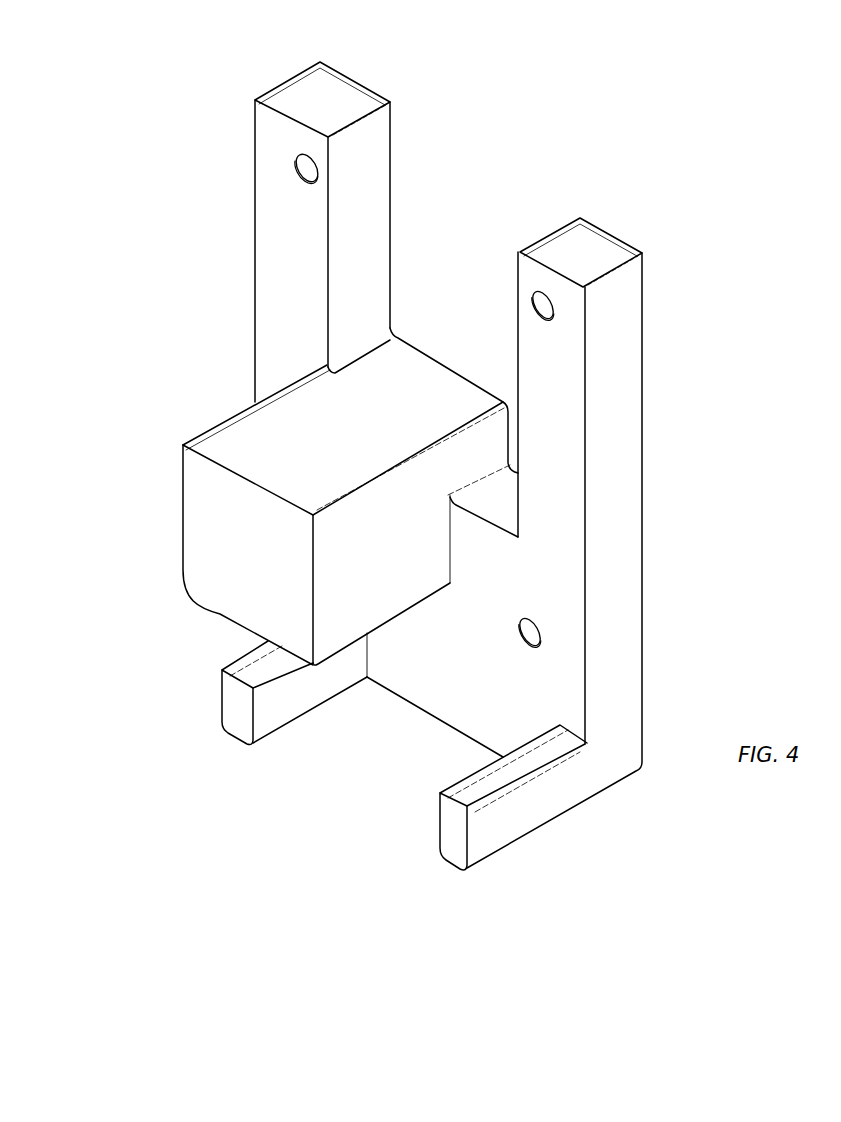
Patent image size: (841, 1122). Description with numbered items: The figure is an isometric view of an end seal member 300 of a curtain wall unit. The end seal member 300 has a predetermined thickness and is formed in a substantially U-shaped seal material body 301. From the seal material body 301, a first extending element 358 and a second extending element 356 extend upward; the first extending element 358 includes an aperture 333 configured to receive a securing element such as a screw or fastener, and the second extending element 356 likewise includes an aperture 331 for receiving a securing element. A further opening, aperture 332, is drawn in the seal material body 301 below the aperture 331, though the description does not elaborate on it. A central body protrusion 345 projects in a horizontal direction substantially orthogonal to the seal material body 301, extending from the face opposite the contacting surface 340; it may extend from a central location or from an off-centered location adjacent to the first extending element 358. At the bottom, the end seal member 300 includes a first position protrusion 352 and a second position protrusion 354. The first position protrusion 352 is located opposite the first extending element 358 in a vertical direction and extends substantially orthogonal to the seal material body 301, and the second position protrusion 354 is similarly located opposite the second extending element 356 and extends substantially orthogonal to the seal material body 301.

The end seal member 300 is at (475, 142).
The seal material body 301 is at (552, 567).
The aperture 331 is at (553, 300).
The lower aperture of first arm 332 is at (530, 627).
The aperture 333 is at (300, 163).
The contacting surface 340 is at (400, 328).
The central body protrusion 345 is at (218, 545).
The first position protrusion 352 is at (260, 713).
The second position protrusion 354 is at (492, 835).
The second extending element 356 is at (582, 255).
The first extending element 358 is at (328, 90).